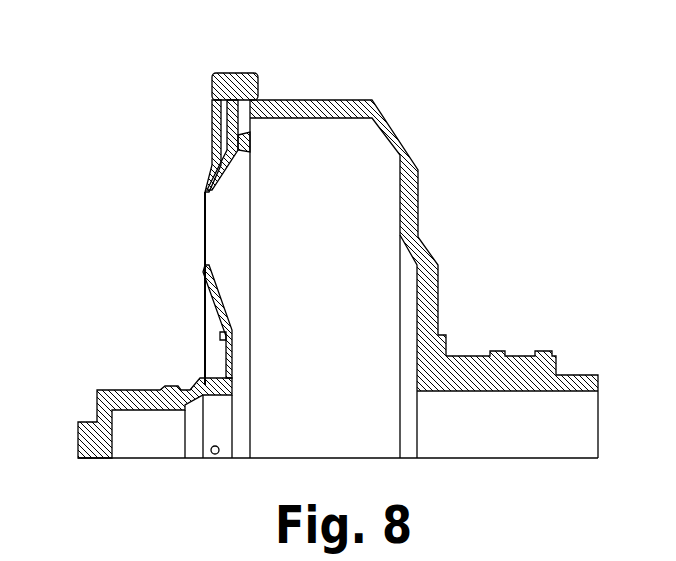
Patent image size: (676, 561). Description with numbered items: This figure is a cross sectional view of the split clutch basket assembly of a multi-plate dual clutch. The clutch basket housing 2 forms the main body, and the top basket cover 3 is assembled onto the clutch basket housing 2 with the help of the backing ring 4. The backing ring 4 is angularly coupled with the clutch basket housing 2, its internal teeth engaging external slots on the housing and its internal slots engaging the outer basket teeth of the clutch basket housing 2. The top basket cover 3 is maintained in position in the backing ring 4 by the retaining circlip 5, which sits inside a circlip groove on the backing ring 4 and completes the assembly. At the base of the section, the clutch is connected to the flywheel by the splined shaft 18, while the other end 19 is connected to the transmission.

The clutch basket housing 2 is at (335, 100).
The top basket cover 3 is at (203, 200).
The backing ring 4 is at (232, 76).
The retaining circlip 5 is at (218, 103).
The splined shaft 18 is at (77, 443).
The other end 19 is at (598, 373).